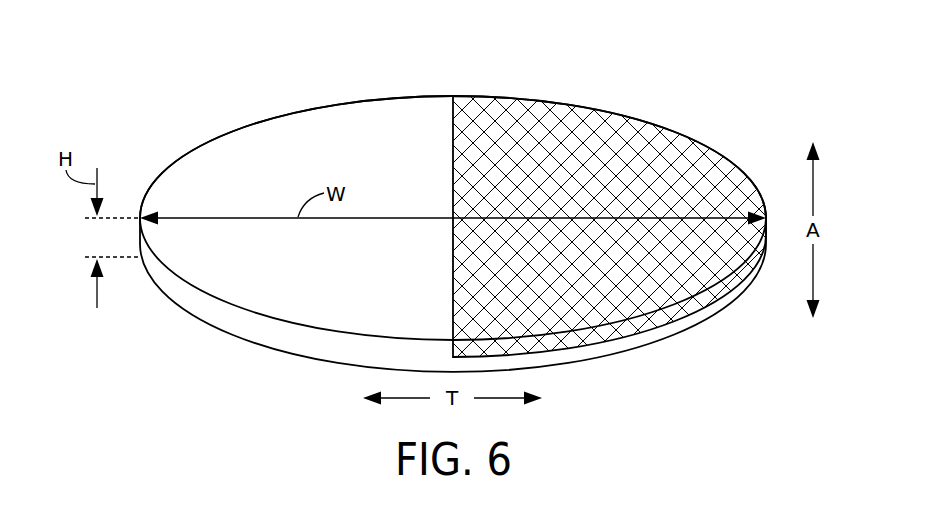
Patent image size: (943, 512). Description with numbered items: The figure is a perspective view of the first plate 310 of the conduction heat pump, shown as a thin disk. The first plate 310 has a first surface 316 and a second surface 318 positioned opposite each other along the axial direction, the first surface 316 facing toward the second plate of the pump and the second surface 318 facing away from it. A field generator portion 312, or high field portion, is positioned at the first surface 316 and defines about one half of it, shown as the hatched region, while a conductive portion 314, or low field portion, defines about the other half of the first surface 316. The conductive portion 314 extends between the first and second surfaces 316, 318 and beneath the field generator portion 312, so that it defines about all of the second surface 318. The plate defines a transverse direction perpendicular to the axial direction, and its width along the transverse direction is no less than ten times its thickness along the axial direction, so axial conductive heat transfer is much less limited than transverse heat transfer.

The first plate 310 is at (447, 207).
The field generator portion 312 is at (547, 128).
The conductive portion 314 is at (383, 127).
The first surface 316 is at (266, 152).
The second surface 318 is at (218, 342).